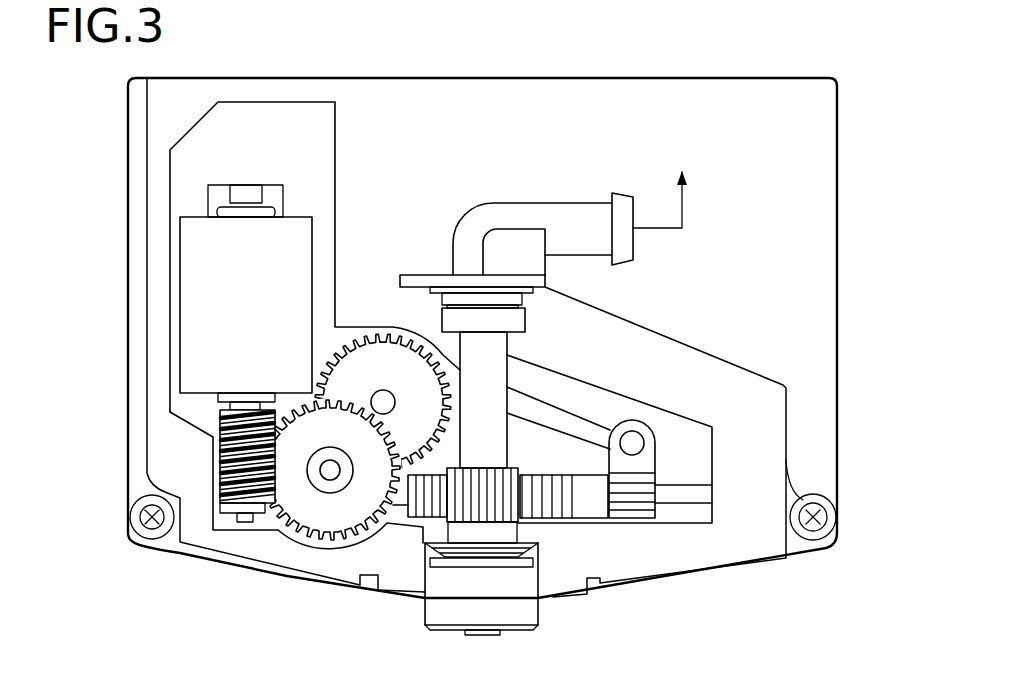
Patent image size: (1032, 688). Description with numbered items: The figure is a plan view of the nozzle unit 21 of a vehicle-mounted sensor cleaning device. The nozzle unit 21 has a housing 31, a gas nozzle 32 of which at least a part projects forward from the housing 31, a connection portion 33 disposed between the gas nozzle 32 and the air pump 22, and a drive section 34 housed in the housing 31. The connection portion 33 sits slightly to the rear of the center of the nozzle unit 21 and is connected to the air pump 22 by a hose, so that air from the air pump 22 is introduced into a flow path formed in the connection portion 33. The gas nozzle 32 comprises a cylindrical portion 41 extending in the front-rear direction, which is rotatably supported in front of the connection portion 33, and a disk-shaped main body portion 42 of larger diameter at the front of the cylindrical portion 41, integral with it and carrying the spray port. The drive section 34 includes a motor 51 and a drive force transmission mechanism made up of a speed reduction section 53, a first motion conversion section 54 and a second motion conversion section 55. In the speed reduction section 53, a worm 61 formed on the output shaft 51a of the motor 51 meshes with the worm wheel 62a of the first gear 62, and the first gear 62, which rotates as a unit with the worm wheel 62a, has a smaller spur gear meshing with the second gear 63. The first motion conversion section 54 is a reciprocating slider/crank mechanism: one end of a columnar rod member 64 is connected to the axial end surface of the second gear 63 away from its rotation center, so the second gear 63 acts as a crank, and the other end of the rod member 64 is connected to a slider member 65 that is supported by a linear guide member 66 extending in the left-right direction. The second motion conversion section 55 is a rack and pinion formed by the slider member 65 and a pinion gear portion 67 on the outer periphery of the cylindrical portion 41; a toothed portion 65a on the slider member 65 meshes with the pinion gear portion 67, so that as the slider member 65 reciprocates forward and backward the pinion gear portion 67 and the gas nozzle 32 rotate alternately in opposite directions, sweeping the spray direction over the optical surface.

The nozzle unit 21 is at (783, 305).
The air pump 22 is at (679, 185).
The housing 31 is at (152, 107).
The gas nozzle 32 is at (530, 608).
The connection portion 33 is at (523, 208).
The drive section 34 is at (158, 365).
The cylindrical portion 41 is at (500, 367).
The main body portion 42 is at (512, 618).
The motor 51 is at (193, 258).
The output shaft 51a is at (243, 407).
The speed reduction section 53 is at (240, 522).
The first motion conversion section 54 is at (633, 408).
The second motion conversion section 55 is at (423, 518).
The worm 61 is at (213, 447).
The first gear 62 is at (322, 537).
The worm wheel 62a is at (287, 503).
The second gear 63 is at (370, 350).
The rod member 64 is at (568, 418).
The slider member 65 is at (593, 507).
The toothed portion 65a is at (557, 508).
The guide member 66 is at (693, 490).
The pinion gear portion 67 is at (478, 510).